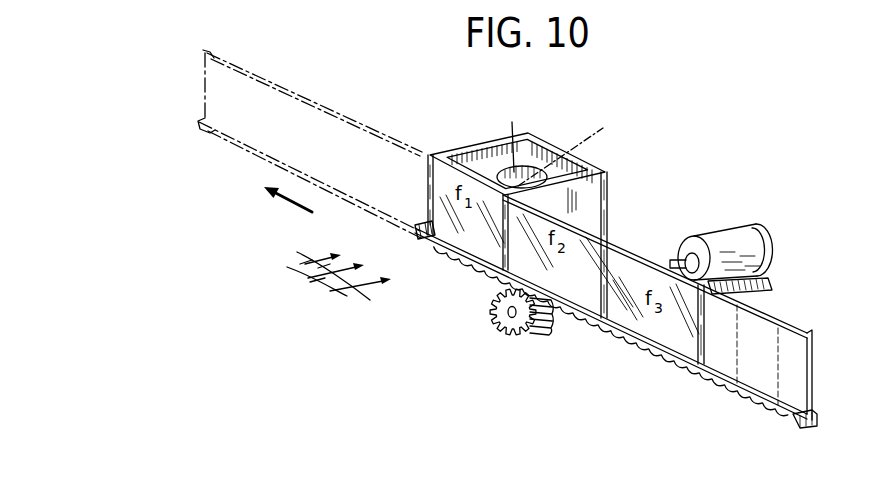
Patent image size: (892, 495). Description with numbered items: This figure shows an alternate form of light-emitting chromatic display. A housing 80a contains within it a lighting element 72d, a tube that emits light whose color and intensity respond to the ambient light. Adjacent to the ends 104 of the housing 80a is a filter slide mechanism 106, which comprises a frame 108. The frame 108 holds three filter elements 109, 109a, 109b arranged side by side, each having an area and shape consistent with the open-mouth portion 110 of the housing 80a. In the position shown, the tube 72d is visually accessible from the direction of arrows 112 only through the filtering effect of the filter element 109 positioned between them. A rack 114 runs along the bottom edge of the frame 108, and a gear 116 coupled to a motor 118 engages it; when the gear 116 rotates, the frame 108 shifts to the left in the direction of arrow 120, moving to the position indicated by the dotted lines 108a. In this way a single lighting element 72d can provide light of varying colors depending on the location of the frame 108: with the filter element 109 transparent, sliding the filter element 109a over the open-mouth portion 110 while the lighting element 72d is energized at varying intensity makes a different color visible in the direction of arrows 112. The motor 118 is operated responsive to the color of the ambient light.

The dotted lines 108a is at (322, 100).
The open-mouth portion 110 is at (464, 171).
The ends 104 is at (433, 158).
The lighting element 72d is at (538, 172).
The housing 80a is at (603, 160).
The filter slide mechanism 106 is at (635, 248).
The motor 118 is at (764, 243).
The arrow 120 is at (275, 203).
The arrows 112 is at (342, 287).
The filter element 109 is at (465, 237).
The filter element 109a is at (523, 262).
The filter element 109b is at (662, 330).
The gear 116 is at (516, 343).
The frame 108 is at (698, 350).
The rack 114 is at (776, 404).